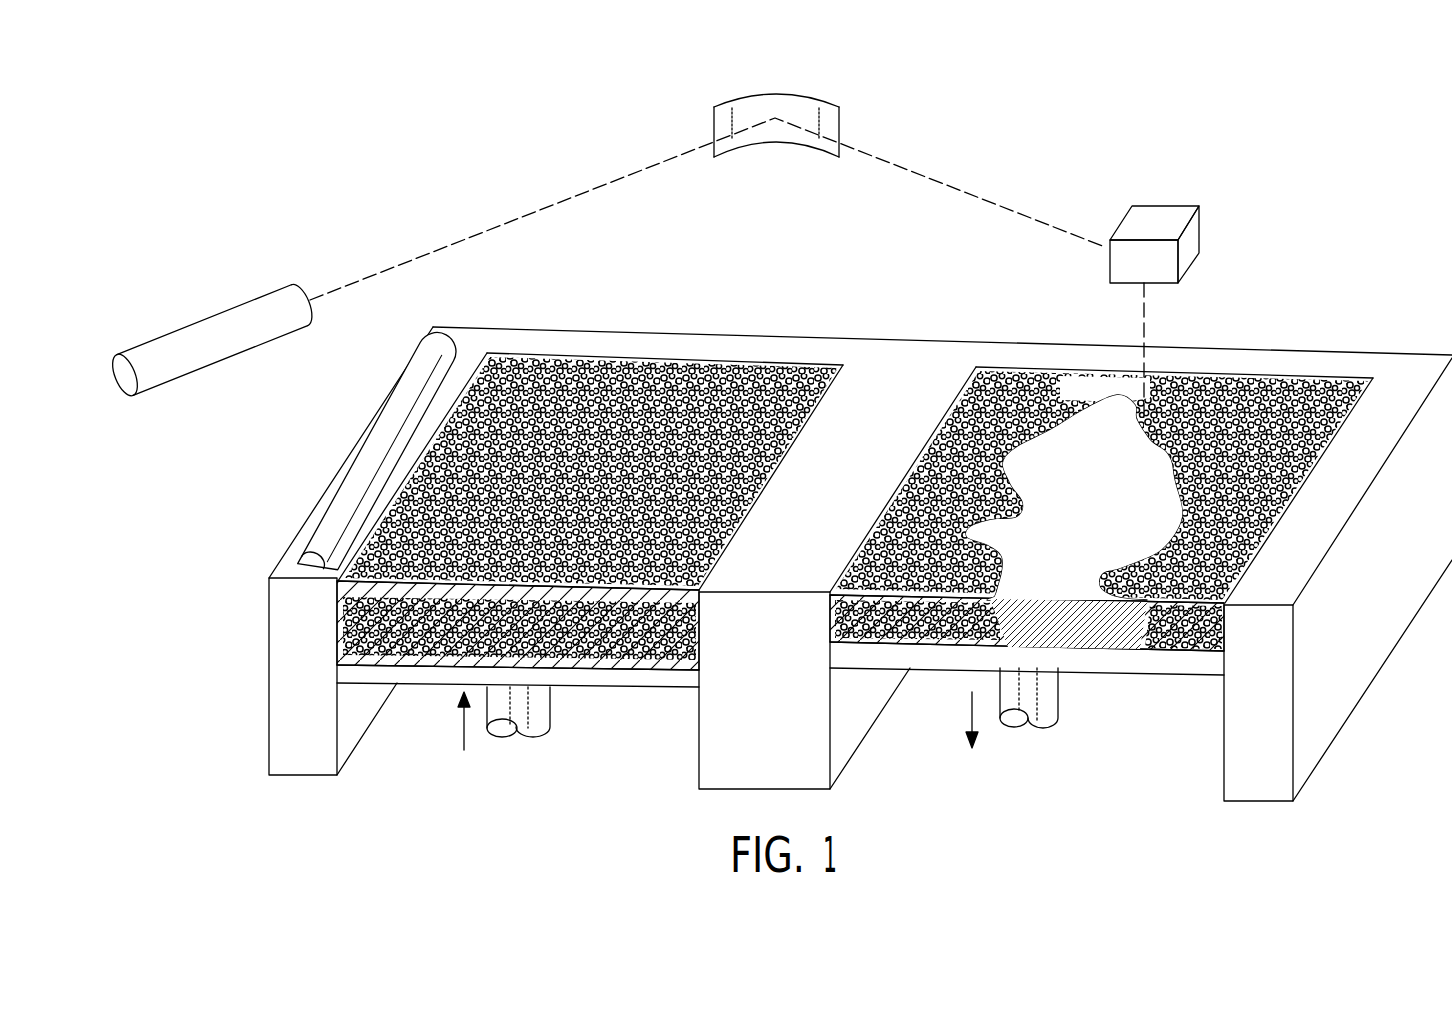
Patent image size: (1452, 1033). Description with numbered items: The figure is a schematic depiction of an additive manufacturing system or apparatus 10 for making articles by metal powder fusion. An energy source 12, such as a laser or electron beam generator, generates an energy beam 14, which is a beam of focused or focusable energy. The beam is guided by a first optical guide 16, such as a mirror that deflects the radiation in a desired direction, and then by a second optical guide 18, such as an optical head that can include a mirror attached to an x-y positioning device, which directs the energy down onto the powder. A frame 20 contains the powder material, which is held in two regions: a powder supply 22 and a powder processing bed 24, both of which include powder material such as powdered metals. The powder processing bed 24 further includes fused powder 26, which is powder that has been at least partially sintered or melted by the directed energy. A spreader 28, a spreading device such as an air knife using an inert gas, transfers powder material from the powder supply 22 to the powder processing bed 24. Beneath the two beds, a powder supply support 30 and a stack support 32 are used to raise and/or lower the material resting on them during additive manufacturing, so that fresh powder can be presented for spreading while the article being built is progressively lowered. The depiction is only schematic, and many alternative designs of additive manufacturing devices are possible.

The additive manufacturing system or apparatus 10 is at (1366, 206).
The energy source 12 is at (190, 322).
The energy beam 14 is at (498, 224).
The optical guide 16 is at (783, 93).
The second optical guide 18 is at (1163, 203).
The frame 20 is at (283, 683).
The powder supply 22 is at (568, 662).
The powder processing bed 24 is at (1190, 652).
The fused powder 26 is at (1073, 482).
The spreader 28 is at (353, 502).
The powder supply support 30 is at (442, 677).
The stack support 32 is at (942, 660).